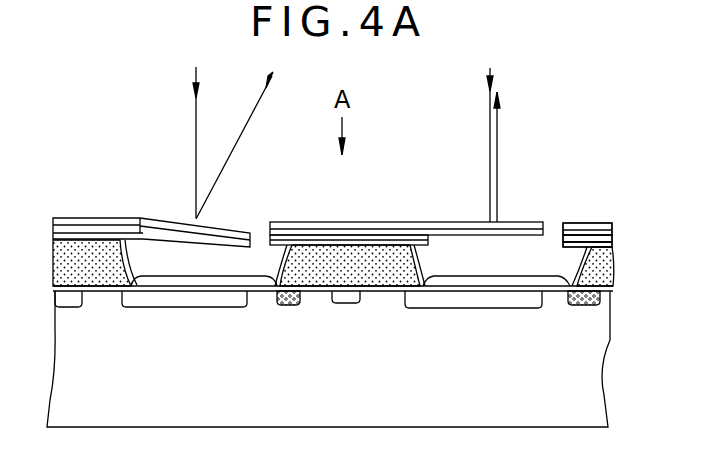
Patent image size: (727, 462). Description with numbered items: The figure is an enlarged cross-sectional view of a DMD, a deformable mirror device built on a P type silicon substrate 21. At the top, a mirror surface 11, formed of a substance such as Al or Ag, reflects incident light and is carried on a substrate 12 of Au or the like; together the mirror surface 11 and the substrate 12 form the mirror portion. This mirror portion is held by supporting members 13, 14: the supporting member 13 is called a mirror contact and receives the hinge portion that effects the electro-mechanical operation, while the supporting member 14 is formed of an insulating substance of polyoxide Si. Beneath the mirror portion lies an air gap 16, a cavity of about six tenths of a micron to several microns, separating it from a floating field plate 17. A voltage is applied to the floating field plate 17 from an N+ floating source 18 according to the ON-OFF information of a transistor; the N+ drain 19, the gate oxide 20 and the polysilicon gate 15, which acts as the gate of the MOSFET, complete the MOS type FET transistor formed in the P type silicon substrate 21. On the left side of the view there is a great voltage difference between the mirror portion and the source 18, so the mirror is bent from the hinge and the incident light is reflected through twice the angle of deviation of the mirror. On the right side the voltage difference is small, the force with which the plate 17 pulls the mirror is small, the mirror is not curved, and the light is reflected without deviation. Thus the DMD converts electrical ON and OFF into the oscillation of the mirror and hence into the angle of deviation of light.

The mirror surface 11 is at (569, 222).
The substrate 12 is at (612, 231).
The supporting member (mirror contact) 13 is at (612, 238).
The supporting member 14 is at (612, 246).
The polysilicon gate 15 is at (612, 277).
The air gap 16 is at (518, 253).
The floating field plate 17 is at (478, 281).
The N+ floating source 18 is at (503, 310).
The N+ drain 19 is at (352, 308).
The gate oxide 20 is at (272, 297).
The P type silicon substrate 21 is at (585, 358).